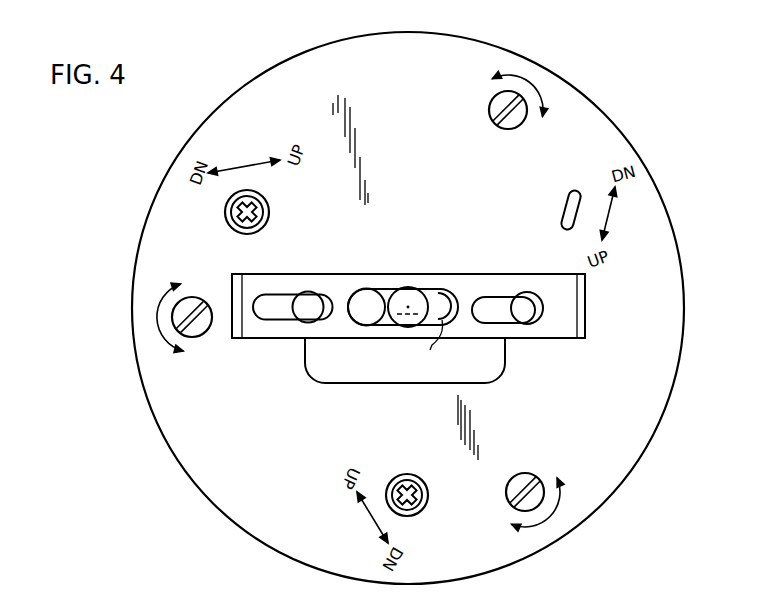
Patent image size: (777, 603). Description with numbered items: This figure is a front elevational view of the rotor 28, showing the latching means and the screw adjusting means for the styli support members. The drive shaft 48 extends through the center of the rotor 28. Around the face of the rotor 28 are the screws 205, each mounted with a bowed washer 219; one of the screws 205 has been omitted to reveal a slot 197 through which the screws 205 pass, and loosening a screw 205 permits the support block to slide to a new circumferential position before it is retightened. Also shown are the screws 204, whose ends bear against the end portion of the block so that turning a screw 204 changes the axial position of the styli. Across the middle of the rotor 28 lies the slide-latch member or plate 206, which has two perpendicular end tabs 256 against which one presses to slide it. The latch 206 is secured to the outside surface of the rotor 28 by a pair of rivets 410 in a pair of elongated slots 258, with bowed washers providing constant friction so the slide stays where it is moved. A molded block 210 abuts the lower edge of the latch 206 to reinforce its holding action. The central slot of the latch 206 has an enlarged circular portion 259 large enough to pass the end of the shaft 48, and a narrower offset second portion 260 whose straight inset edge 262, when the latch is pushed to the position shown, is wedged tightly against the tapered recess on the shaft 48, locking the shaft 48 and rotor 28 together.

The rotor 28 is at (421, 75).
The drive shaft 48 is at (410, 303).
The slot 197 is at (580, 190).
The screw 204 is at (515, 92).
The screw 205 is at (240, 213).
The slide-latch member 206 is at (292, 273).
The molded block 210 is at (312, 377).
The bowed washer 219 is at (232, 224).
The end tab 256 is at (583, 329).
The elongated slot 258 is at (266, 295).
The enlarged circular portion 259 is at (370, 303).
The second portion 260 is at (443, 289).
The straight inset edge 262 is at (437, 351).
The rivet 410 is at (308, 292).